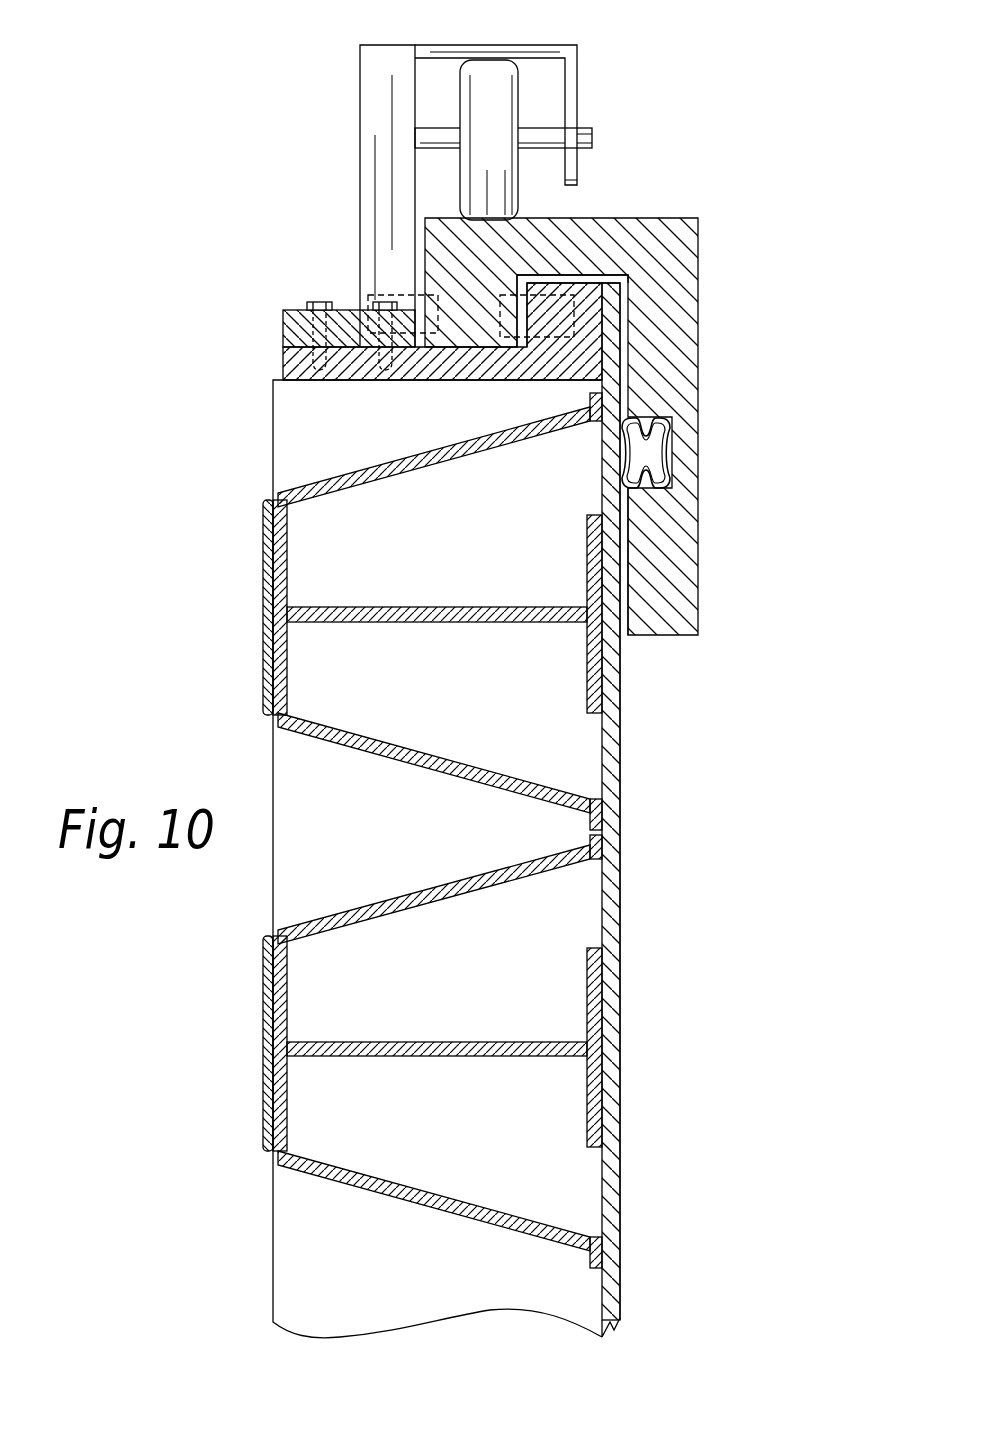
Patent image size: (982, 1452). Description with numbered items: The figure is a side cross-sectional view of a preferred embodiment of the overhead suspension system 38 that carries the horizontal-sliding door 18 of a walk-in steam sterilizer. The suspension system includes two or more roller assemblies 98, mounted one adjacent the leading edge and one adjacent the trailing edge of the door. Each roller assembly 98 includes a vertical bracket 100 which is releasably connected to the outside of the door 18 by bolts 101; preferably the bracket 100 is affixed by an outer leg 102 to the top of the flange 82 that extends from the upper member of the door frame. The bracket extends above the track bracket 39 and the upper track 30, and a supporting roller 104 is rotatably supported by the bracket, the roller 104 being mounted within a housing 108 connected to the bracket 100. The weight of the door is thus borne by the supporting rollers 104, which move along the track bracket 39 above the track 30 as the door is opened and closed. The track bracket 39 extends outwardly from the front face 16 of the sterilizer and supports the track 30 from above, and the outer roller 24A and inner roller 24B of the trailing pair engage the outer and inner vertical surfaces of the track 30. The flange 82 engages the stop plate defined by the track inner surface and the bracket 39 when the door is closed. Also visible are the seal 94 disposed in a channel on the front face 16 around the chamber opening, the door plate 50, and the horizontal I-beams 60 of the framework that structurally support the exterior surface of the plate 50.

The overhead suspension system 38 is at (345, 40).
The roller assembly 98 is at (330, 106).
The vertical bracket 100 is at (372, 168).
The housing 108 is at (520, 45).
The supporting roller 104 is at (487, 128).
The bracket 39 is at (660, 226).
The upper track 30 is at (482, 292).
The seal 94 is at (672, 447).
The front face 16 is at (625, 605).
The plate 50 is at (615, 943).
The flange 82 is at (590, 360).
The outer leg 102 is at (290, 330).
The bolts 101 is at (320, 301).
The outer roller 24A is at (400, 295).
The inner roller 24B is at (575, 320).
The horizontal-sliding door 18 is at (208, 549).
The I-beams 60 is at (277, 672).